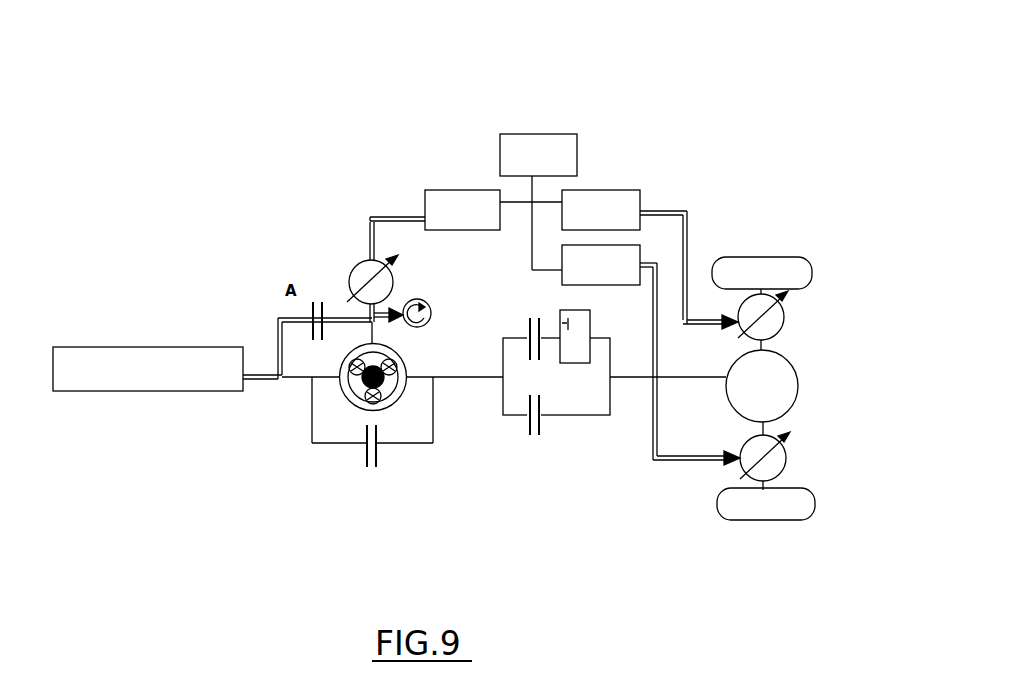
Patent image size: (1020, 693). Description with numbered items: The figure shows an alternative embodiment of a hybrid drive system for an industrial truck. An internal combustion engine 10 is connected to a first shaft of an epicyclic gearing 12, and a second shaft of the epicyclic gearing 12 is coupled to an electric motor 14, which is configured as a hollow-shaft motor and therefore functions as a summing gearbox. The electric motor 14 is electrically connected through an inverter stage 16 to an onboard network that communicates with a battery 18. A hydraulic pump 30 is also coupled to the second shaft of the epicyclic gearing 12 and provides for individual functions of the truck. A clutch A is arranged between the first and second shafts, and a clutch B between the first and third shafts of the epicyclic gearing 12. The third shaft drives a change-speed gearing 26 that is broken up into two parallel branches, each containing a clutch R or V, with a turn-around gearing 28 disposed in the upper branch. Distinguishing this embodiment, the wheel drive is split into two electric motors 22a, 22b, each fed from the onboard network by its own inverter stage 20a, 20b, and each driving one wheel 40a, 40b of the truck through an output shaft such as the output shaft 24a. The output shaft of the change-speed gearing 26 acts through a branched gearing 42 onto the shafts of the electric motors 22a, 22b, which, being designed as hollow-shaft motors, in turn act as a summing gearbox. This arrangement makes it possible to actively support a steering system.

The internal combustion engine 10 is at (122, 355).
The epicyclic gearing 12 is at (403, 367).
The electric motor 14 is at (357, 268).
The inverter stage 16 is at (458, 203).
The battery 18 is at (528, 140).
The inverter stage 20a is at (610, 200).
The inverter stage 20b is at (632, 255).
The electric motor 22a is at (780, 318).
The electric motor 22b is at (788, 458).
The output shaft 24a is at (667, 380).
The change-speed gearing 26 is at (581, 430).
The turn-around gearing 28 is at (583, 335).
The hydraulic pump 30 is at (433, 308).
The wheel 40a is at (770, 267).
The wheel 40b is at (803, 502).
The branched gearing 42 is at (793, 387).